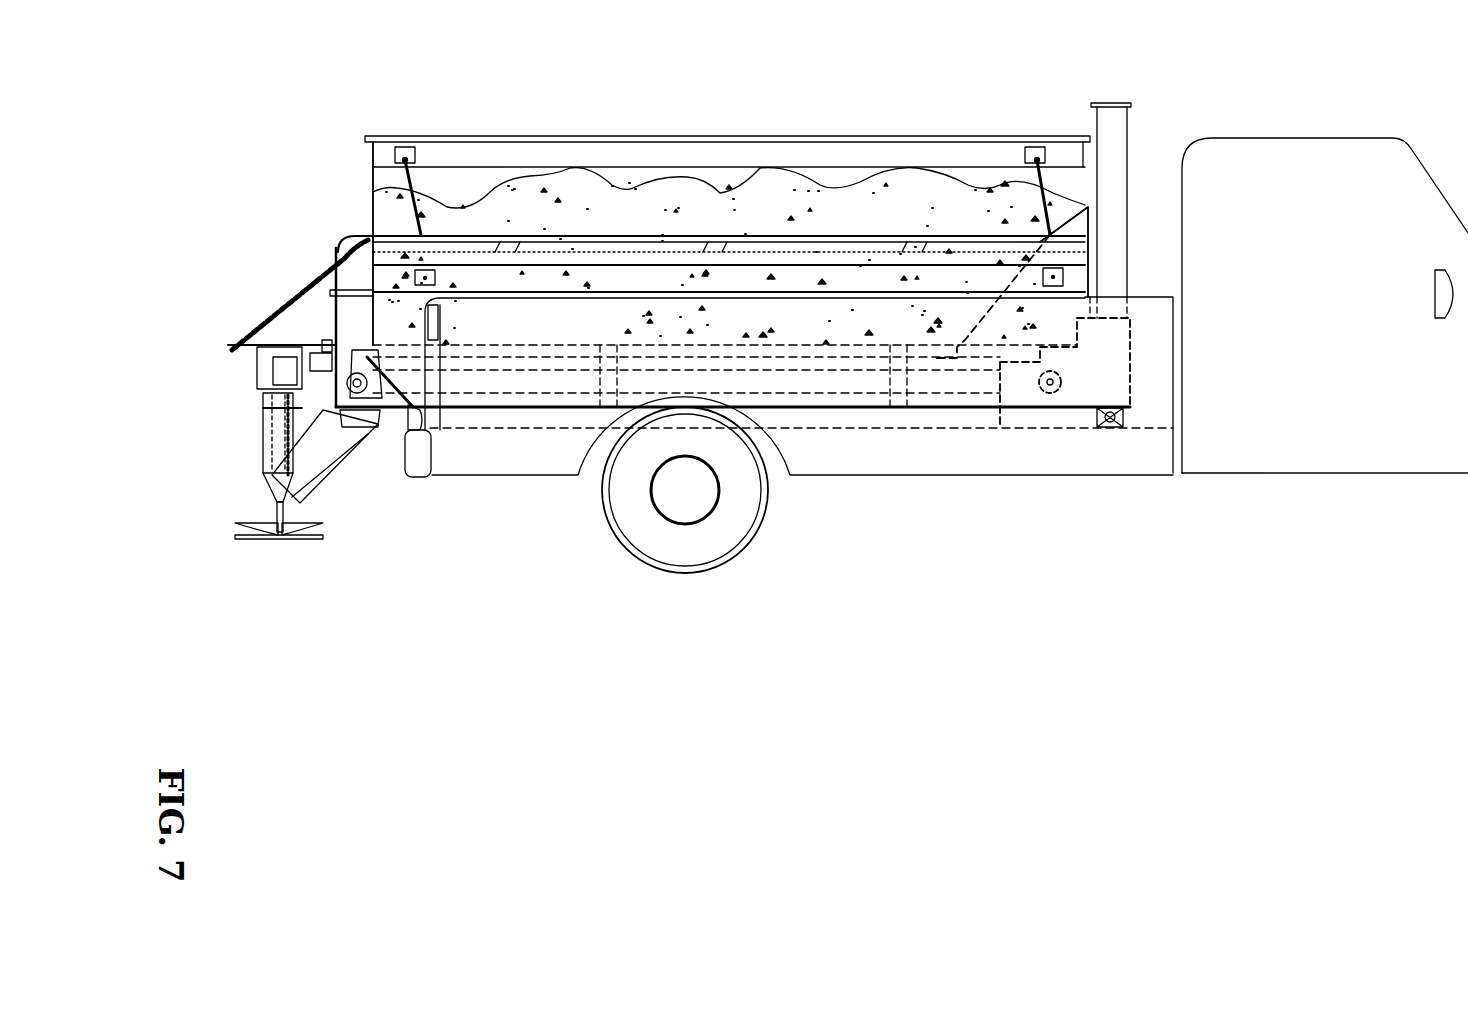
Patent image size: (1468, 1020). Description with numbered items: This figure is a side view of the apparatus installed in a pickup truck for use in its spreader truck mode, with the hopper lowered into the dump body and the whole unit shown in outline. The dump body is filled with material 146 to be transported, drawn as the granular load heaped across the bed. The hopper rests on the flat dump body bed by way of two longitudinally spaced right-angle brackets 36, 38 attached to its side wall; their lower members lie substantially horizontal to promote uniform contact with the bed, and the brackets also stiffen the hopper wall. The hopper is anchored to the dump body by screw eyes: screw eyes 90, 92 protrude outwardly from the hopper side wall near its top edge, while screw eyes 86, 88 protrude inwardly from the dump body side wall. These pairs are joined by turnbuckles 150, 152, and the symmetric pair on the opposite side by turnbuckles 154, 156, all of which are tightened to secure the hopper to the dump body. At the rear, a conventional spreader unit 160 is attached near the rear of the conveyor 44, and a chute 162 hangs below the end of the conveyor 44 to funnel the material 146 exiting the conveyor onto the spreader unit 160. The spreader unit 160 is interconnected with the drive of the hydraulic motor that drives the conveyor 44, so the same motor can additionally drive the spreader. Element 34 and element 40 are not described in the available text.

The truck frame 34 is at (832, 352).
The right-angle bracket 36 is at (607, 380).
The right-angle bracket 38 is at (898, 380).
The hydraulic cylinder 40 is at (973, 335).
The conveyor 44 is at (1057, 400).
The screw eye 86 is at (433, 277).
The screw eye 88 is at (1065, 273).
The screw eye 90 is at (413, 148).
The screw eye 92 is at (1042, 148).
The material 146 is at (772, 193).
The turnbuckle 150 is at (413, 212).
The turnbuckle 152 is at (1043, 240).
The turnbuckle 154 is at (383, 197).
The turnbuckle 156 is at (1033, 213).
The spreader unit 160 is at (258, 432).
The chute 162 is at (333, 470).